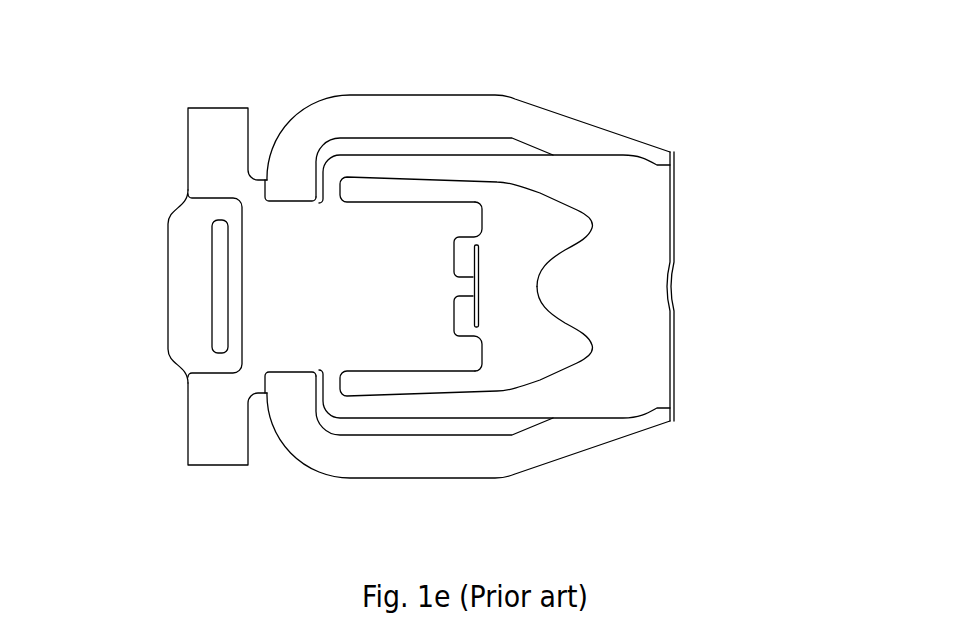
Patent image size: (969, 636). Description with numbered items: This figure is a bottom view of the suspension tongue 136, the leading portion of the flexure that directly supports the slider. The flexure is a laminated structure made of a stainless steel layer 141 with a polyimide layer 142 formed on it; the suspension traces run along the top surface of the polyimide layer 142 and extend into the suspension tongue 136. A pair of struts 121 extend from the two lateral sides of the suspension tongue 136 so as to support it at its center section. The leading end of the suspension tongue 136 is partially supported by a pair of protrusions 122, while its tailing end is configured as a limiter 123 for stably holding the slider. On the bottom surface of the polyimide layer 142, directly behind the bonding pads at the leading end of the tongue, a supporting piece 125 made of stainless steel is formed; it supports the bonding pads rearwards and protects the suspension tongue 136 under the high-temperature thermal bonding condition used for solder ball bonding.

The struts 121 is at (335, 113).
The protrusions 122 is at (210, 142).
The limiter 123 is at (475, 287).
The supporting piece 125 is at (220, 280).
The suspension tongue 136 is at (377, 252).
The stainless steel layer 141 is at (263, 343).
The polyimide layer 142 is at (183, 215).